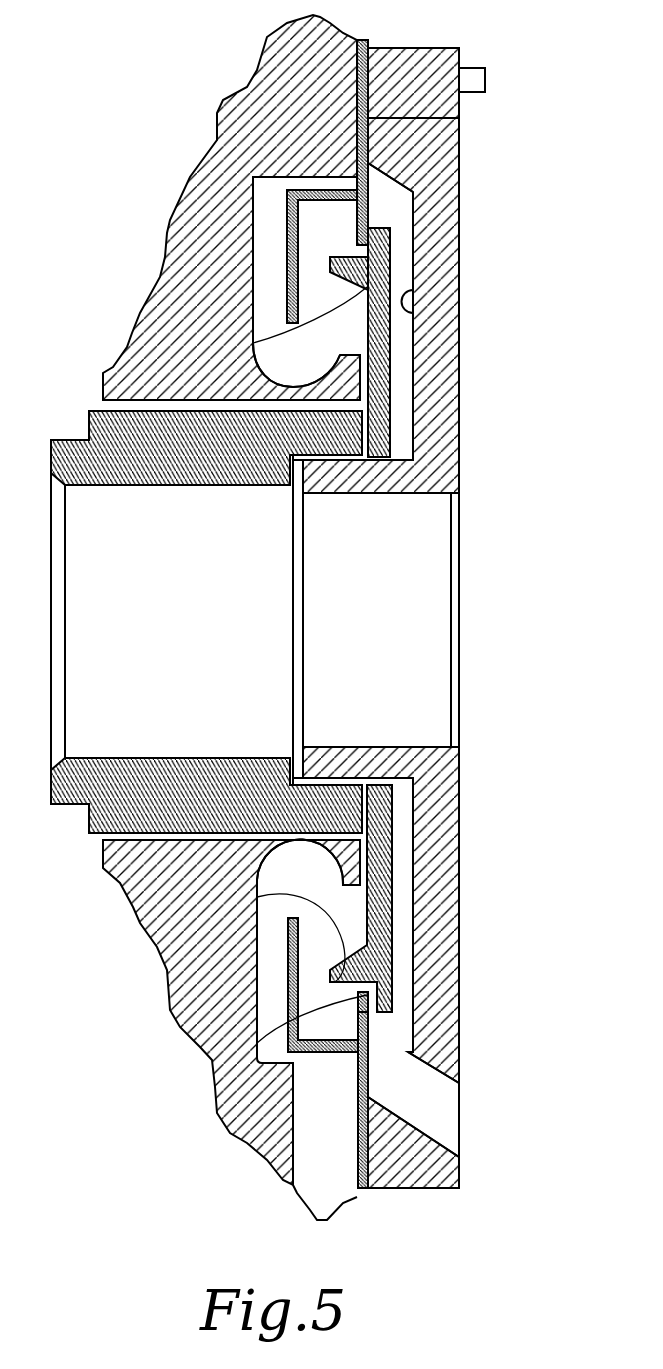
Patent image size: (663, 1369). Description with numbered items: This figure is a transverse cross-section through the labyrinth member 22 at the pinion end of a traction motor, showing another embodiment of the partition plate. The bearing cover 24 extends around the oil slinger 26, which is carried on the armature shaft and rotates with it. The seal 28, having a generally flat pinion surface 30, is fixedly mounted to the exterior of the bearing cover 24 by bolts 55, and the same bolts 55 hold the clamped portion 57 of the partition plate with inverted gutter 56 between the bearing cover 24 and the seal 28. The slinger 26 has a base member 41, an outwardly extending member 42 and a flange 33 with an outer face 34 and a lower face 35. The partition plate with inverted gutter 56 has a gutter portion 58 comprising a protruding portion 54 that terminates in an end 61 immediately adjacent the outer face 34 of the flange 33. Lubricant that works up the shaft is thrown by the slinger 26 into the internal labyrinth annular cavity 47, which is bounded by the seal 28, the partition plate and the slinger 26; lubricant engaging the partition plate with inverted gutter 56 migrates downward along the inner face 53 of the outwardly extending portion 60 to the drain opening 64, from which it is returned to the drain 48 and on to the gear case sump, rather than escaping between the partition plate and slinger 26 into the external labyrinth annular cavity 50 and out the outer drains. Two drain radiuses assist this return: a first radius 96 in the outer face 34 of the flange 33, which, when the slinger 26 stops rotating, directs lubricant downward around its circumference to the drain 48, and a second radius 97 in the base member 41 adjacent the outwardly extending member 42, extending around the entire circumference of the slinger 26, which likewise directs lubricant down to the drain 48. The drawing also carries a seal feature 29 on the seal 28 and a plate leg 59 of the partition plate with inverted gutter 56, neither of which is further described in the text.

The labyrinth member 22 is at (498, 183).
The bearing cover 24 is at (217, 113).
The oil slinger 26 is at (390, 403).
The seal 28 is at (450, 327).
The projection 29 is at (413, 290).
The pinion surface 30 is at (460, 457).
The flange 33 is at (368, 947).
The outer face 34 is at (287, 1016).
The lower face 35 is at (257, 893).
The base member 41 is at (158, 486).
The outwardly extending member 42 is at (368, 342).
The internal labyrinth annular cavity 47 is at (395, 215).
The drain openings 48 is at (460, 1121).
The external labyrinth annular cavity 50 is at (270, 297).
The inner face 53 is at (323, 1025).
The protruding portion 54 is at (460, 163).
The bolts 55 is at (475, 86).
The partition plate with inverted gutter 56 is at (333, 183).
The clamped portion 57 is at (369, 110).
The gutter portion 58 is at (310, 177).
The vertical leg 59 is at (290, 247).
The outwardly extending portion 60 is at (303, 187).
The end 61 is at (283, 220).
The drain opening 64 is at (363, 1023).
The first radius 96 is at (253, 343).
The second radius 97 is at (366, 462).